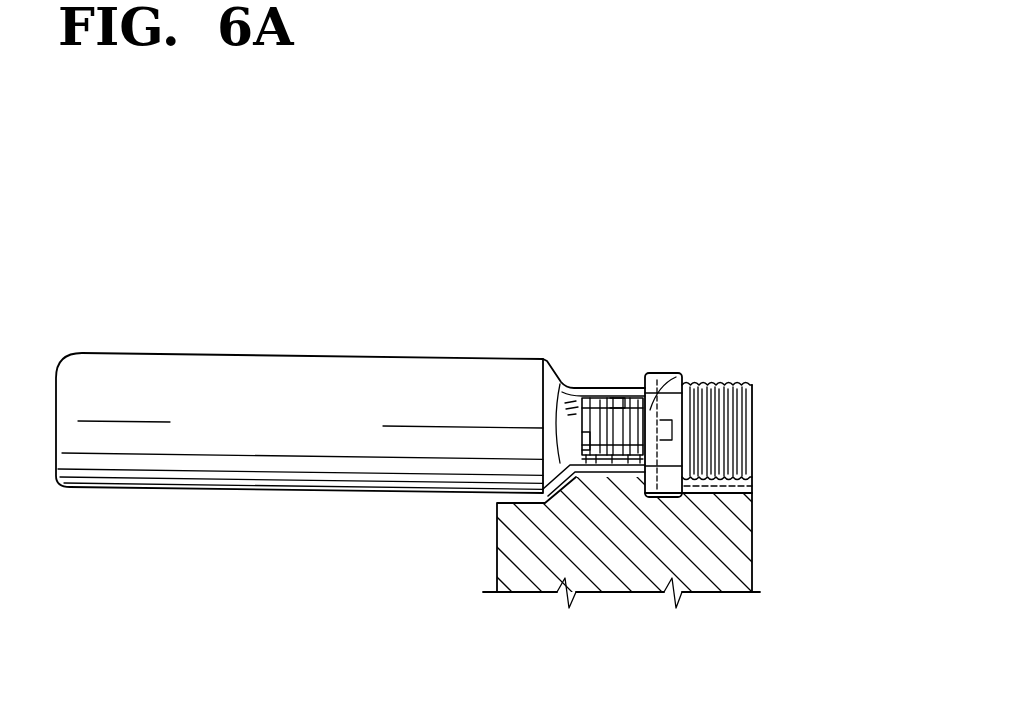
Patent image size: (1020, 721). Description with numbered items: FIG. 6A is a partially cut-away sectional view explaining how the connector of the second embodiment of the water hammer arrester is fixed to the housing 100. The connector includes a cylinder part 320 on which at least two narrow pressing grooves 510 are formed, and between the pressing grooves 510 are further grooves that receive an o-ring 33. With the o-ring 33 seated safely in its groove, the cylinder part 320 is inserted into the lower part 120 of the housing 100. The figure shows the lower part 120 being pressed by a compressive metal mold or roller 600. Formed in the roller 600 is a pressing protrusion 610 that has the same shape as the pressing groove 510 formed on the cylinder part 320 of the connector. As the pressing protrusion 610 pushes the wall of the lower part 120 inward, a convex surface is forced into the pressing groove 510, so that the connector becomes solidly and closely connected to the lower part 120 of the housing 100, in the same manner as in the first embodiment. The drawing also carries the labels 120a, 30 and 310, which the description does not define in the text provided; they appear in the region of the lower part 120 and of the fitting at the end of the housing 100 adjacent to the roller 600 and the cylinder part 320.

The housing 100 is at (338, 366).
The cylinder part 320 is at (588, 438).
The lower part 120 is at (593, 393).
The o-ring 33 is at (616, 396).
The ferrule 120a is at (668, 426).
The fitting nut 30 is at (690, 418).
The threaded portion 310 is at (738, 402).
The pressing protrusion 610 is at (683, 471).
The compressive metal mold or roller 600 is at (534, 565).
The pressing groove 510 is at (578, 478).